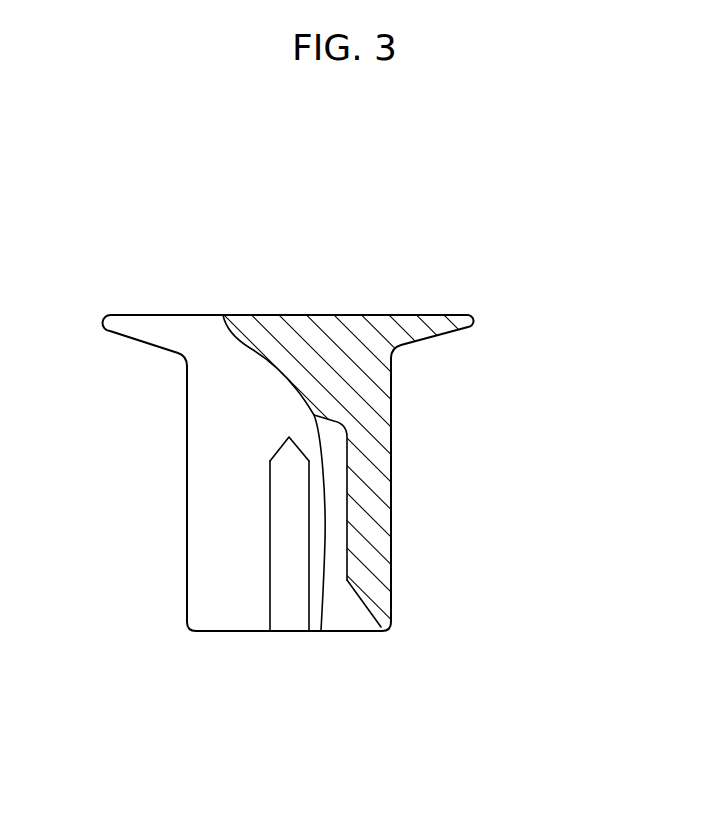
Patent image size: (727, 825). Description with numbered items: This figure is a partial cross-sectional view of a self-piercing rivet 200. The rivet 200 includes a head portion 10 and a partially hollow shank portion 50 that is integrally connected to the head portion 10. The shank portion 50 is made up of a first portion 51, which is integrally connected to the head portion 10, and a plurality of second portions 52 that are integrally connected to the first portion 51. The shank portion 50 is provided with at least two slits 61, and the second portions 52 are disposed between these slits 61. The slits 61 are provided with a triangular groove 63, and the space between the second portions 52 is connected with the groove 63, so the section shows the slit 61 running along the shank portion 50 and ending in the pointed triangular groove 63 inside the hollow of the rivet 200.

The rivet 200 is at (305, 214).
The head portion 10 is at (422, 328).
The shank portion 50 is at (402, 477).
The first portion 51 is at (392, 392).
The second portions 52 is at (392, 553).
The slits 61 is at (296, 594).
The triangular groove 63 is at (289, 448).